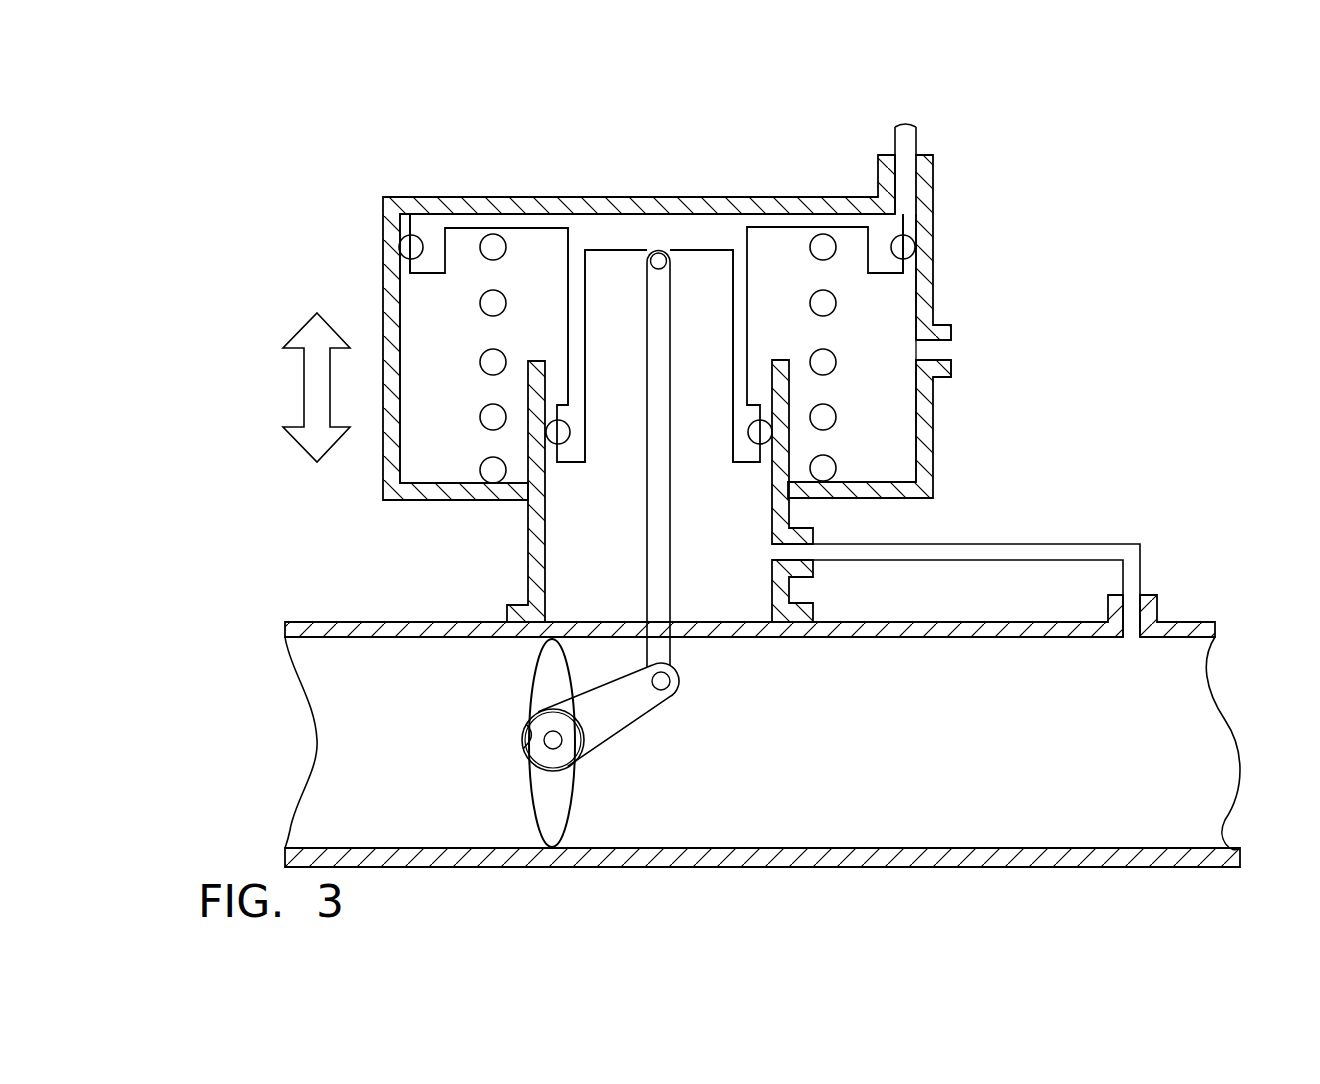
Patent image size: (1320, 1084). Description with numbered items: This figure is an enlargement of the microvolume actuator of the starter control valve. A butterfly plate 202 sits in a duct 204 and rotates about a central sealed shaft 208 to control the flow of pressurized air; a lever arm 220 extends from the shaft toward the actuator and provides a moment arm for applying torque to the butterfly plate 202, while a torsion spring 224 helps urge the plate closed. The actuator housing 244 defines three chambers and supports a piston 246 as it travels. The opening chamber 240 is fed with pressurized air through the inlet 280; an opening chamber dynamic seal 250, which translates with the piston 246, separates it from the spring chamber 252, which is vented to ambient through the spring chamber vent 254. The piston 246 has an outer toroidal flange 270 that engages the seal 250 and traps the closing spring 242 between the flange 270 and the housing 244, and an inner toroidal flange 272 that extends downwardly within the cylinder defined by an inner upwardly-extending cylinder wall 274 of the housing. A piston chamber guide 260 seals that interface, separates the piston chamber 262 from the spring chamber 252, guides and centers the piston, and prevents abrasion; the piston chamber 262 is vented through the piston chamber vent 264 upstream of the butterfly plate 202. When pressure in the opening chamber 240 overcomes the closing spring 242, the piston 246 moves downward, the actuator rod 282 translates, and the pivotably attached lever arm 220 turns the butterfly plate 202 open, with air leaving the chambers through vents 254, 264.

The butterfly plate 202 is at (545, 668).
The duct 204 is at (1051, 750).
The central sealed shaft 208 is at (562, 740).
The lever arm 220 is at (680, 682).
The torsion spring 224 is at (527, 733).
The opening chamber 240 is at (398, 222).
The closing spring 242 is at (488, 373).
The actuator housing 244 is at (927, 445).
The piston 246 is at (582, 227).
The opening chamber dynamic seal 250 is at (408, 250).
The spring chamber 252 is at (452, 326).
The spring chamber vent 254 is at (945, 352).
The piston chamber guide 260 is at (560, 433).
The piston chamber 262 is at (636, 419).
The piston chamber vent 264 is at (1136, 592).
The outer toroidal flange 270 is at (438, 258).
The inner toroidal flange 272 is at (577, 310).
The inner cylinder wall 274 is at (533, 360).
The inlet 280 is at (917, 145).
The actuator rod 282 is at (662, 417).